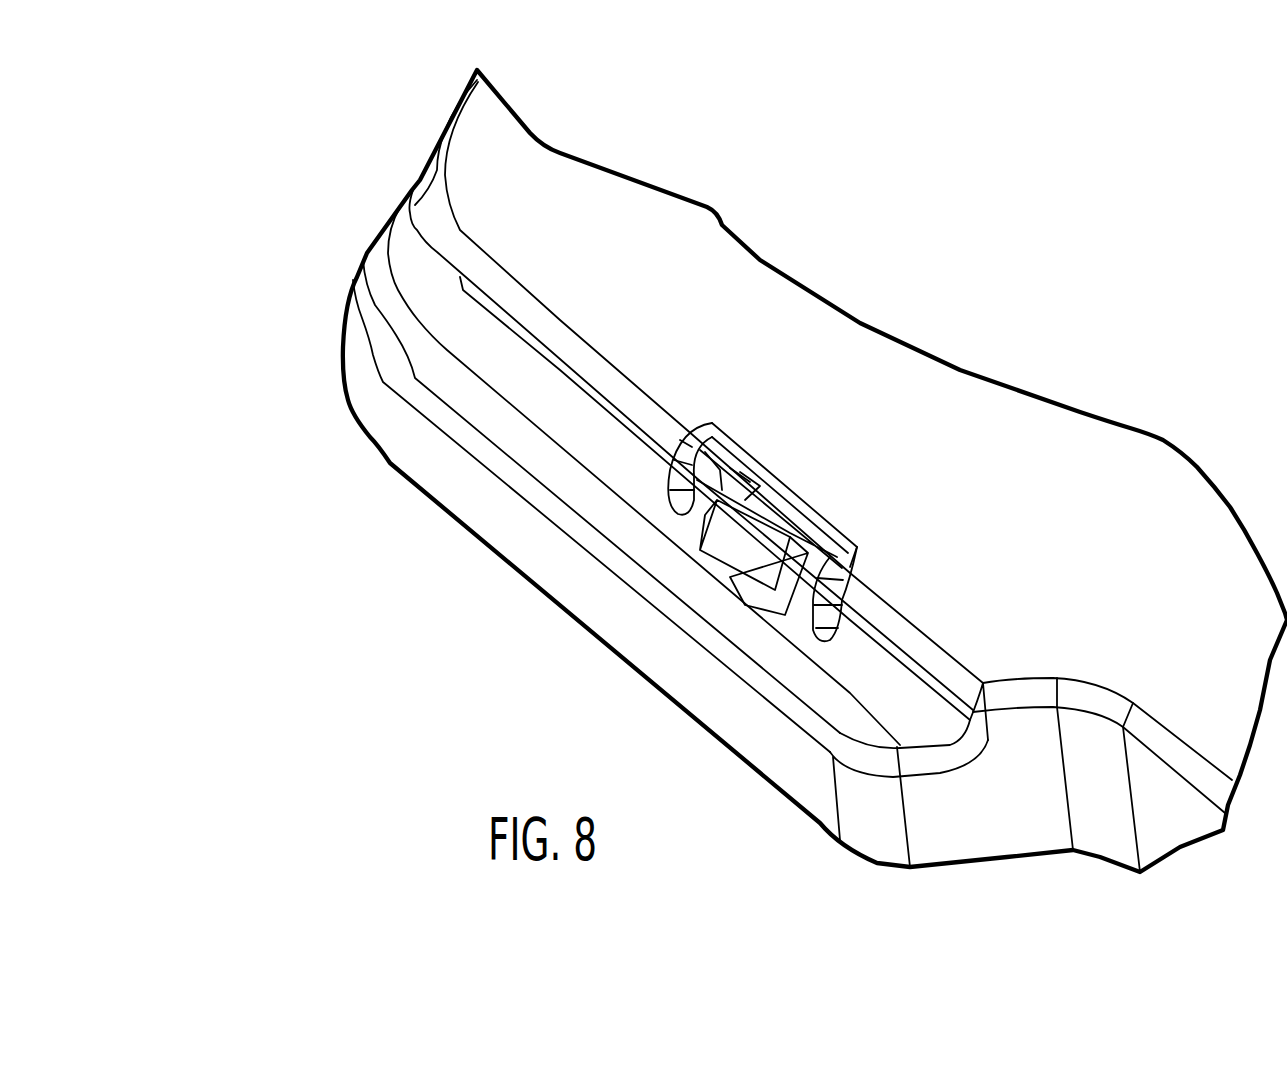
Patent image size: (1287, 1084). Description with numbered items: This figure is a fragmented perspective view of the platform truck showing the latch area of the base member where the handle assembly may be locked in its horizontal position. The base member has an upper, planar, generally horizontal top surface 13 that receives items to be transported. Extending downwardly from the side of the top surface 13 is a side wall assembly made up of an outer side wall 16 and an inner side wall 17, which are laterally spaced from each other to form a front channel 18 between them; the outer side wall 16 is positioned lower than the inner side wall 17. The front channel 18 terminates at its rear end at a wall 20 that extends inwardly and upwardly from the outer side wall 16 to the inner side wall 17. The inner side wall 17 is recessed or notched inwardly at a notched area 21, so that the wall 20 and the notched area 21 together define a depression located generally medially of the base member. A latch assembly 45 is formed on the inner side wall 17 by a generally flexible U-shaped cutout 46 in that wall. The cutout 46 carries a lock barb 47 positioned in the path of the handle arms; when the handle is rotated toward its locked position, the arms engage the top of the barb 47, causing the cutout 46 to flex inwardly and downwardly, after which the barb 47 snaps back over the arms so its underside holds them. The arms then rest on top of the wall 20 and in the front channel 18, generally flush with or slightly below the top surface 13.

The top surface 13 is at (913, 463).
The outer side wall 16 is at (420, 447).
The inner side wall 17 is at (548, 328).
The front channel 18 is at (560, 427).
The wall 20 is at (970, 837).
The notched area 21 is at (1167, 817).
The latch assembly 45 is at (793, 456).
The U-shaped cutout 46 is at (807, 553).
The lock barb 47 is at (752, 515).